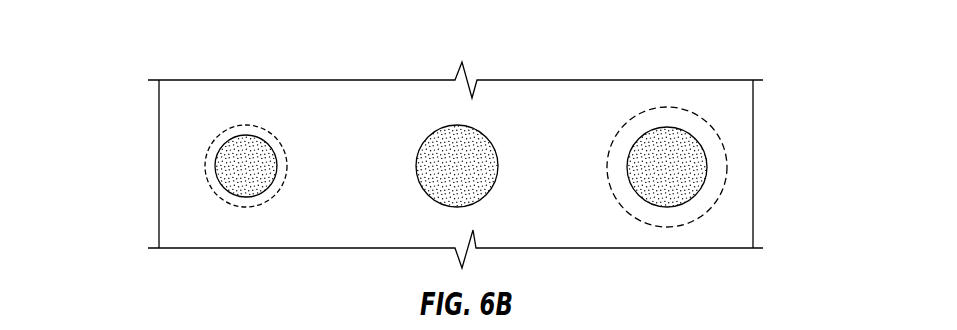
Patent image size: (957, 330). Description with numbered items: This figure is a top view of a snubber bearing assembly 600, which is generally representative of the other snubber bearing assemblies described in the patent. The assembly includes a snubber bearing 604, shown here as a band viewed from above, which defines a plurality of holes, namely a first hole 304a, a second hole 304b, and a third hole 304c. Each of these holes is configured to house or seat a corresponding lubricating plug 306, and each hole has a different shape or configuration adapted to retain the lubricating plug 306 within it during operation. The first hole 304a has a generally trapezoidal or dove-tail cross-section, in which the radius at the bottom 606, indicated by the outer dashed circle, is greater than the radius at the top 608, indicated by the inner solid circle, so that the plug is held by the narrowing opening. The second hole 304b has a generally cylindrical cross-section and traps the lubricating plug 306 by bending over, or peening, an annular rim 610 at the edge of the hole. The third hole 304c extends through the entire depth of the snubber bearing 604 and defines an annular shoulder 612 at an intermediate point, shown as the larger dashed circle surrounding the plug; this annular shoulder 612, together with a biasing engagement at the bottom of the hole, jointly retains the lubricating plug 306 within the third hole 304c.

The snubber bearing assembly 600 is at (426, 146).
The snubber bearing 604 is at (538, 96).
The bottom of the first hole 606 is at (238, 127).
The top of the first hole 608 is at (248, 199).
The annular rim 610 is at (463, 207).
The annular shoulder 612 is at (667, 106).
The first hole 304a is at (282, 164).
The second hole 304b is at (509, 169).
The third hole 304c is at (714, 137).
The lubricating plug 306 is at (265, 177).